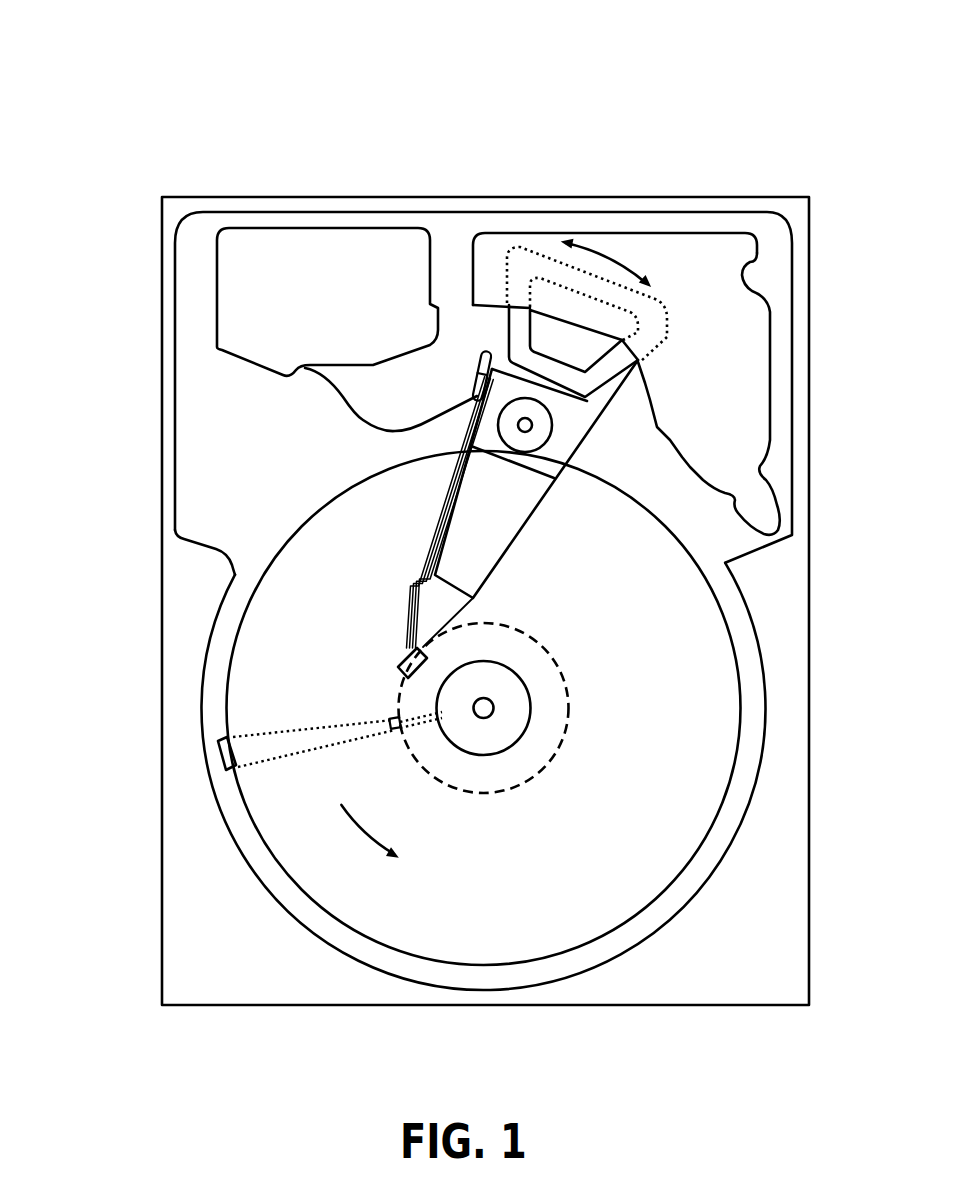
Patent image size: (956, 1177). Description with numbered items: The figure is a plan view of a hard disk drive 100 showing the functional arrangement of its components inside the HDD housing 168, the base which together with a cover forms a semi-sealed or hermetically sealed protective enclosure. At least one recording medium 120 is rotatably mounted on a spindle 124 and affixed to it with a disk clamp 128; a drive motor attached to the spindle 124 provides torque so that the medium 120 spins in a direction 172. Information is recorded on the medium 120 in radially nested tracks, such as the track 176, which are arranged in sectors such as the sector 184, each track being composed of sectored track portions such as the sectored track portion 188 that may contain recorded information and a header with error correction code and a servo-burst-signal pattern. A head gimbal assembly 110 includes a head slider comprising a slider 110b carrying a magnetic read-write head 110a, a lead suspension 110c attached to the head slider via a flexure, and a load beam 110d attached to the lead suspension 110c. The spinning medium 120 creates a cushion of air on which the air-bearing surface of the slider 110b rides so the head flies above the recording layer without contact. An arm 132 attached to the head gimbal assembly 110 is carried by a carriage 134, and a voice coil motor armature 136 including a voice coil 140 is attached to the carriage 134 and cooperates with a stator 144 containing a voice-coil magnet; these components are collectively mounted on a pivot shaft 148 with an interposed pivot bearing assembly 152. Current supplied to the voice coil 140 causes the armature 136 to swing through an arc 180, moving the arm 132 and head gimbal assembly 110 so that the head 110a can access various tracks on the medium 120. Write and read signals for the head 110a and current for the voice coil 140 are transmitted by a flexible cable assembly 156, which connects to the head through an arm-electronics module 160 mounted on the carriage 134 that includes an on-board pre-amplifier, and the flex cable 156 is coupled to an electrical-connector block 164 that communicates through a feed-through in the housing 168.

The hard disk drive 100 is at (84, 72).
The head gimbal assembly 110 is at (90, 510).
The magnetic read-write head 110a is at (392, 680).
The slider 110b is at (408, 645).
The lead suspension 110c is at (413, 612).
The load beam 110d is at (425, 583).
The recording medium 120 is at (672, 660).
The spindle 124 is at (490, 708).
The disk clamp 128 is at (515, 732).
The arm 132 is at (477, 542).
The carriage 134 is at (543, 458).
The armature 136 is at (503, 340).
The voice coil 140 is at (520, 317).
The stator 144 is at (737, 328).
The pivot shaft 148 is at (533, 425).
The pivot bearing assembly 152 is at (538, 437).
The flexible cable assembly 156 is at (343, 398).
The arm-electronics module 160 is at (475, 390).
The electrical-connector block 164 is at (242, 300).
The HDD housing 168 is at (790, 212).
The direction 172 is at (392, 825).
The track 176 is at (558, 665).
The arc 180 is at (603, 253).
The sector 184 is at (220, 752).
The sectored track portion 188 is at (388, 720).